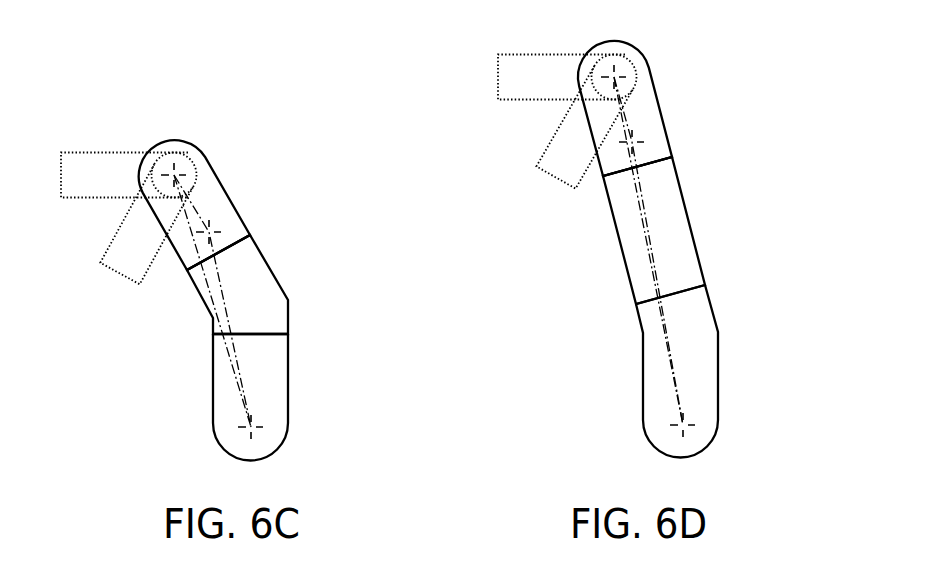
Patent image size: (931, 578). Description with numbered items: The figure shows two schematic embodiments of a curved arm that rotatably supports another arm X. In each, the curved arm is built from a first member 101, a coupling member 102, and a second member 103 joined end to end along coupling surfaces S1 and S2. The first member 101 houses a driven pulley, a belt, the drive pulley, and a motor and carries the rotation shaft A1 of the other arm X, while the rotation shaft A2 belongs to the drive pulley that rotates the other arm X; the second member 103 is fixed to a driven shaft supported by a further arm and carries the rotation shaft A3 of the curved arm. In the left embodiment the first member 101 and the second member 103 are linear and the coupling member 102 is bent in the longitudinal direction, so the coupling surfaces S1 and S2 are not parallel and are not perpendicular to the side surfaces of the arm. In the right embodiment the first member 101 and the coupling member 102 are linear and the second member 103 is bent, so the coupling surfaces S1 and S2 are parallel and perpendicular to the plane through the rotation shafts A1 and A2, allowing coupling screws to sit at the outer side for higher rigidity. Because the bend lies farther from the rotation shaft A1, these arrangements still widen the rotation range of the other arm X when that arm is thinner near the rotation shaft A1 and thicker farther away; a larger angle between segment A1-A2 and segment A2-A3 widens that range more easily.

In FIG. 6C, the first member 101 is at (220, 178).
In FIG. 6D, the first member 101 is at (670, 138).
In FIG. 6C, the coupling member 102 is at (288, 300).
In FIG. 6D, the coupling member 102 is at (692, 225).
In FIG. 6C, the second member 103 is at (288, 368).
In FIG. 6D, the second member 103 is at (720, 343).
In FIG. 6C, the coupling surface S1 is at (237, 243).
In FIG. 6D, the coupling surface S1 is at (663, 160).
In FIG. 6C, the coupling surface S2 is at (273, 332).
In FIG. 6D, the coupling surface S2 is at (688, 287).
In FIG. 6C, the rotation shaft of the other arm A1 is at (176, 173).
In FIG. 6D, the rotation shaft of the other arm A1 is at (616, 75).
In FIG. 6C, the rotation shaft of the drive pulley A2 is at (210, 230).
In FIG. 6D, the rotation shaft of the drive pulley A2 is at (634, 140).
In FIG. 6C, the rotation shaft of the curved arm A3 is at (253, 422).
In FIG. 6D, the rotation shaft of the curved arm A3 is at (685, 422).
In FIG. 6C, the other arm X is at (120, 273).
In FIG. 6D, the other arm X is at (558, 182).